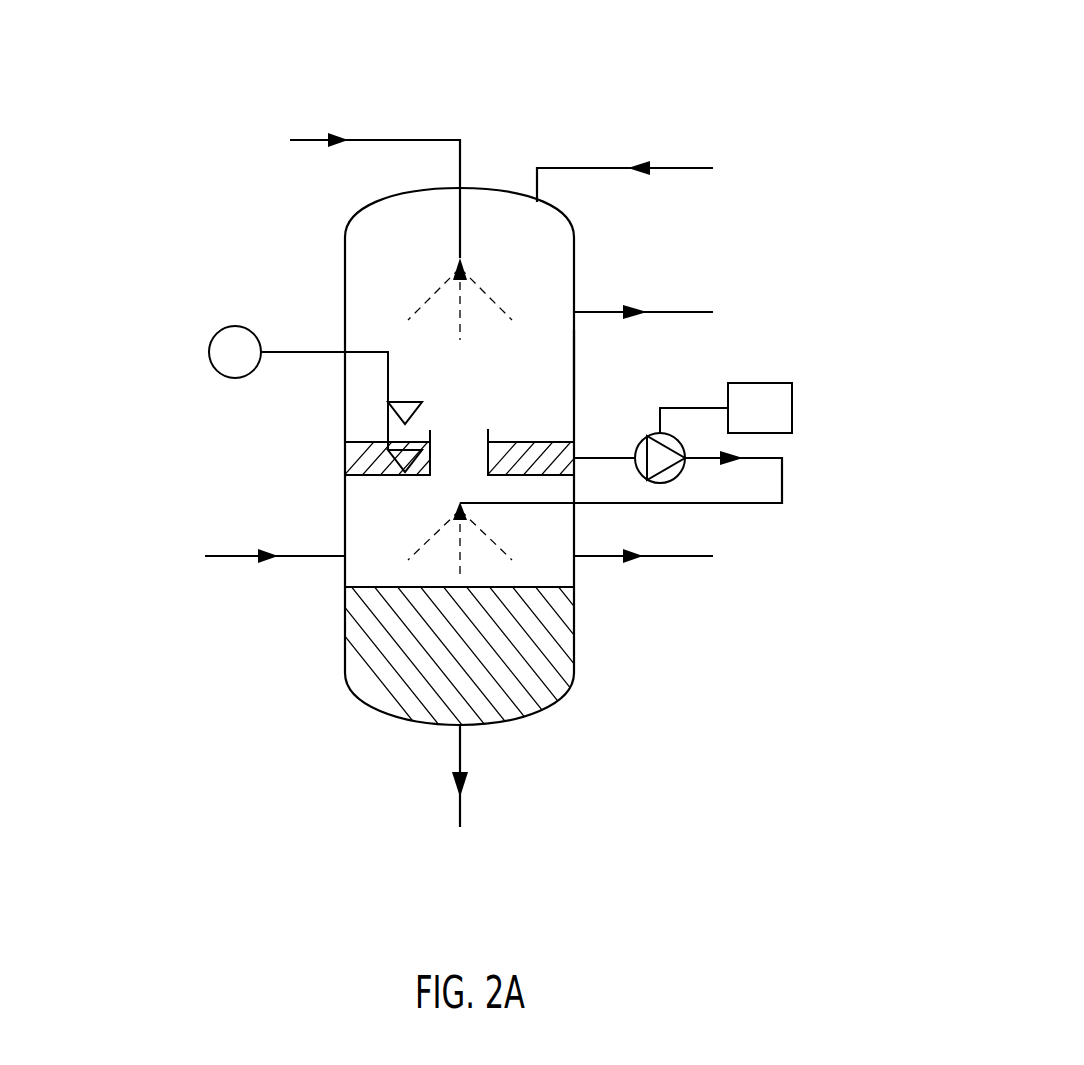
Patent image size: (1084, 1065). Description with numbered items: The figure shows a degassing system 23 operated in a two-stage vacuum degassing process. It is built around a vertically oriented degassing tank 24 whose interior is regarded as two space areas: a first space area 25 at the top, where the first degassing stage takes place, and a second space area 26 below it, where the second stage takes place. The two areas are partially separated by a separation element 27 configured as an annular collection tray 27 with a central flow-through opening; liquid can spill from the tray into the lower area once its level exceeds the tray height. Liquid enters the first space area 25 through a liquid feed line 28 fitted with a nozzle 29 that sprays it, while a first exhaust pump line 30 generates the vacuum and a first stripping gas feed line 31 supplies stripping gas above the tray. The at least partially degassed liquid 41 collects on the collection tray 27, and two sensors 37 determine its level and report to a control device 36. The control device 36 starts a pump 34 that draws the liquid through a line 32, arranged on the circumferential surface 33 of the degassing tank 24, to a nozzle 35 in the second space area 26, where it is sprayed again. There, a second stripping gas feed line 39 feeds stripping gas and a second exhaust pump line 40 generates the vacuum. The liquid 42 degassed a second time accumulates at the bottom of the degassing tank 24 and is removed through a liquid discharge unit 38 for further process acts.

The degassing system 23 is at (600, 42).
The degassing tank 24 is at (586, 528).
The first space area 25 is at (545, 255).
The second space area 26 is at (532, 552).
The separation element 27 is at (368, 477).
The liquid feed line 28 is at (393, 140).
The nozzle 29 is at (458, 260).
The first exhaust pump line 30 is at (681, 311).
The first stripping gas feed line 31 is at (681, 167).
The line 32 is at (603, 456).
The circumferential surface 33 is at (576, 361).
The pump 34 is at (642, 430).
The nozzle 35 is at (458, 503).
The control device 36 is at (747, 424).
The sensors 37 is at (398, 392).
The liquid discharge unit 38 is at (463, 755).
The second stripping gas feed line 39 is at (229, 558).
The second exhaust pump line 40 is at (686, 558).
The at least partially degassed liquid 41 is at (356, 460).
The liquid degassed a second time 42 is at (393, 700).